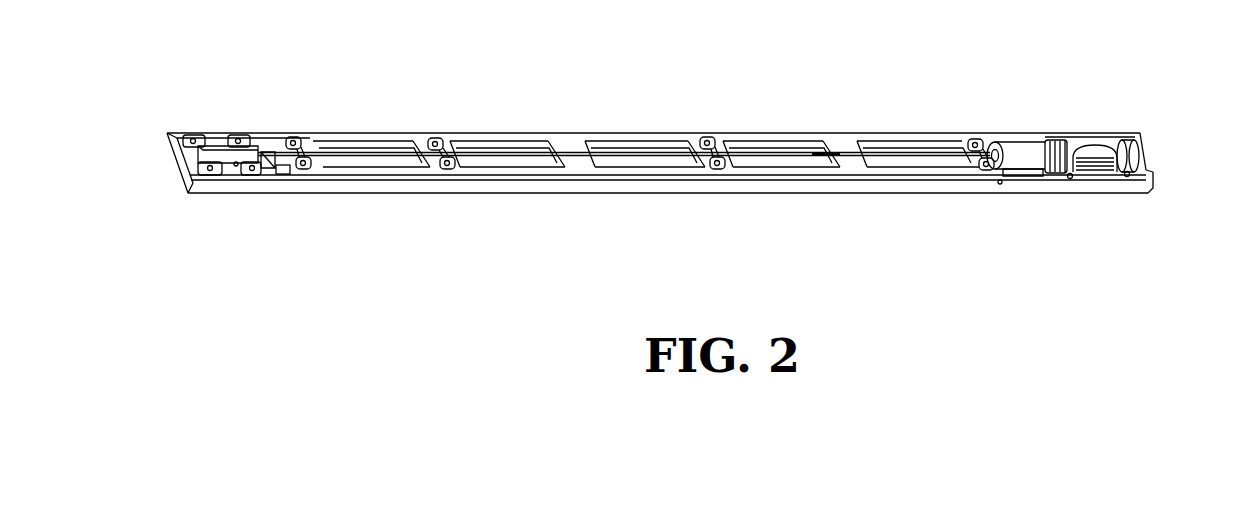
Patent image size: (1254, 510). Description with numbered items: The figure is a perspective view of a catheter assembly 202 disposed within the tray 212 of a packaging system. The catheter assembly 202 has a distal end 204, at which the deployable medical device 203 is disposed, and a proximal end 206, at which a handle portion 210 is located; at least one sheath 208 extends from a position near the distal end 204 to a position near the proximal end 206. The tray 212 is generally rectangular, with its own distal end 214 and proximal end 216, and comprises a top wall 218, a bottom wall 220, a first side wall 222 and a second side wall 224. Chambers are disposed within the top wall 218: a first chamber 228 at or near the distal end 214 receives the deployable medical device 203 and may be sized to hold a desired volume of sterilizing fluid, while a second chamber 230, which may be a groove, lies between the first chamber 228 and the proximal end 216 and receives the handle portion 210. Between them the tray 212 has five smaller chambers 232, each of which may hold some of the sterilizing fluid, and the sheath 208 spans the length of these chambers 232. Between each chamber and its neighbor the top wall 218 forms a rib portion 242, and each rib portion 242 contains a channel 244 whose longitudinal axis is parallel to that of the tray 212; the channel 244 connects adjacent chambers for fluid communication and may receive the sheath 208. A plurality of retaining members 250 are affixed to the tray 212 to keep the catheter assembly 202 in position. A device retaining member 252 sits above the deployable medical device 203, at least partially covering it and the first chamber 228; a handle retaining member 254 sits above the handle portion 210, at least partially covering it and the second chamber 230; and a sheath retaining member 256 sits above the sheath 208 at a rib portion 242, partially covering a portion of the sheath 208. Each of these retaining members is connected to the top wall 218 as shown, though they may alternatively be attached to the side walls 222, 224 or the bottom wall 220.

The catheter assembly 202 is at (1126, 136).
The deployable medical device 203 is at (262, 150).
The distal end 204 is at (195, 150).
The proximal end 206 is at (1143, 138).
The sheath 208 is at (395, 160).
The handle portion 210 is at (1018, 148).
The tray 212 is at (517, 131).
The distal end 214 is at (178, 174).
The proximal end 216 is at (1147, 177).
The top wall 218 is at (575, 150).
The bottom wall 220 is at (538, 194).
The first side wall 222 is at (672, 184).
The second side wall 224 is at (658, 135).
The first chamber 228 is at (281, 172).
The second chamber 230 is at (1024, 175).
The third chamber 232 is at (777, 137).
The rib portion 242 is at (453, 182).
The channel 244 is at (857, 148).
The retaining member 250 is at (231, 164).
The device retaining member 252 is at (220, 143).
The handle retaining member 254 is at (1110, 162).
The sheath retaining member 256 is at (435, 131).